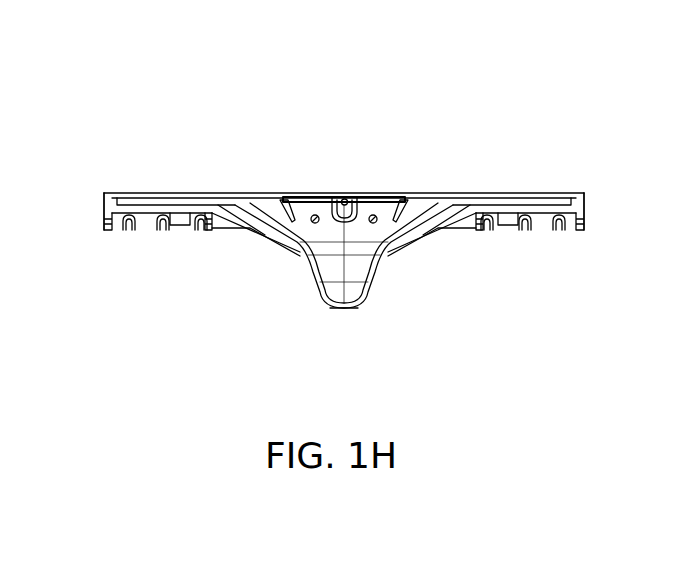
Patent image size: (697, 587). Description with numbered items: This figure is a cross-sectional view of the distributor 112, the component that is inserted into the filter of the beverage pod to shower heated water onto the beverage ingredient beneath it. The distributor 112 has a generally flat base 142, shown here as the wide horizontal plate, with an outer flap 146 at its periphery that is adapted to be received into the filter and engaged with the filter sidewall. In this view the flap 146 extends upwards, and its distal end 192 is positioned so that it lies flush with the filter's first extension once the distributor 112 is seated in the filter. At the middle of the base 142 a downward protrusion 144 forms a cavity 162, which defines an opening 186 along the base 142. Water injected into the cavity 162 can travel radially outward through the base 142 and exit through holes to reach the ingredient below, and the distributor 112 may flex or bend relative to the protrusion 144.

The distributor 112 is at (346, 79).
The base 142 is at (497, 206).
The protrusion 144 is at (323, 306).
The outer flap 146 is at (585, 213).
The cavity 162 is at (325, 265).
The opening 186 is at (238, 198).
The distal end 192 is at (110, 193).